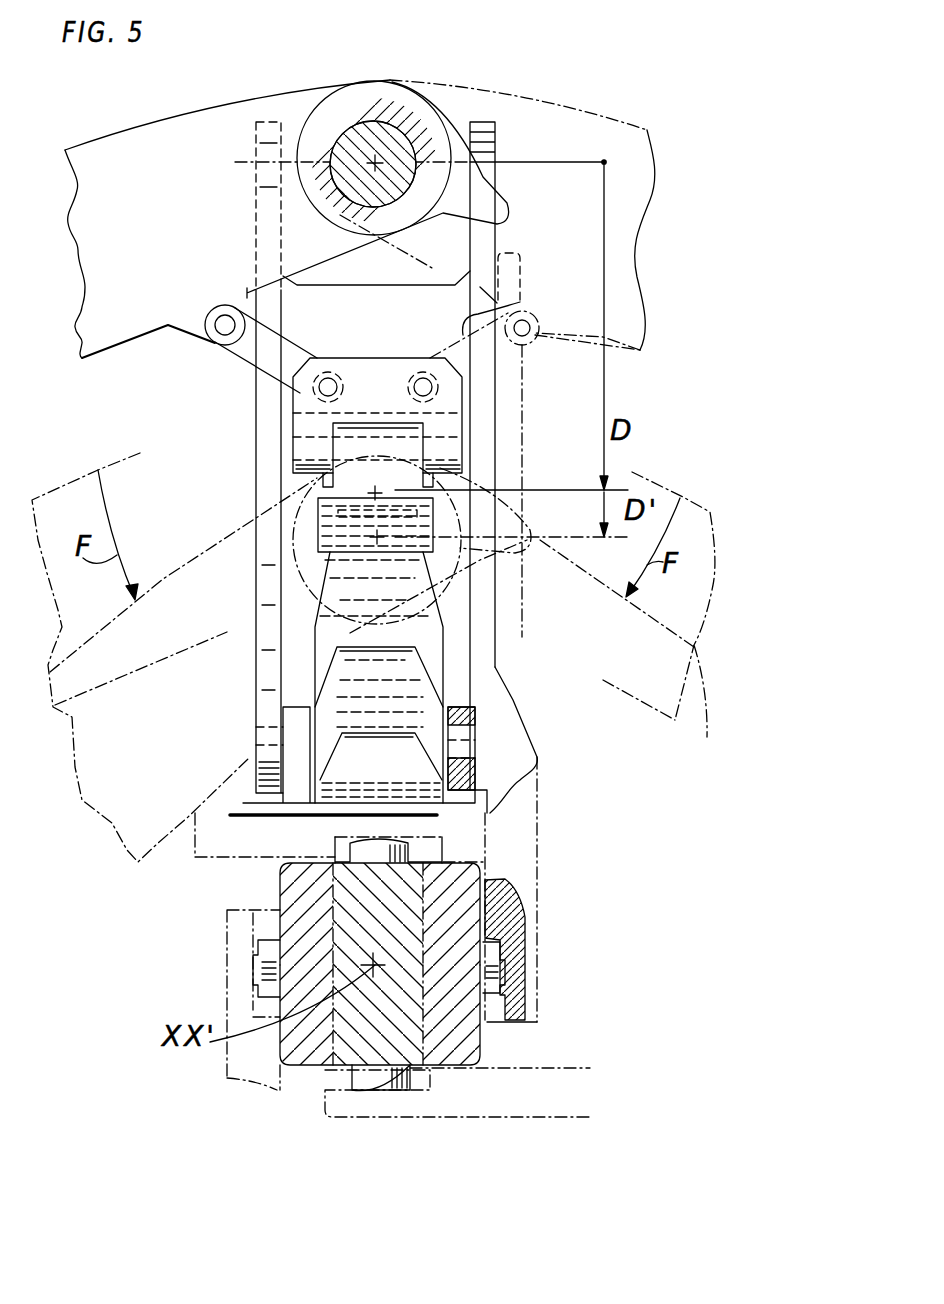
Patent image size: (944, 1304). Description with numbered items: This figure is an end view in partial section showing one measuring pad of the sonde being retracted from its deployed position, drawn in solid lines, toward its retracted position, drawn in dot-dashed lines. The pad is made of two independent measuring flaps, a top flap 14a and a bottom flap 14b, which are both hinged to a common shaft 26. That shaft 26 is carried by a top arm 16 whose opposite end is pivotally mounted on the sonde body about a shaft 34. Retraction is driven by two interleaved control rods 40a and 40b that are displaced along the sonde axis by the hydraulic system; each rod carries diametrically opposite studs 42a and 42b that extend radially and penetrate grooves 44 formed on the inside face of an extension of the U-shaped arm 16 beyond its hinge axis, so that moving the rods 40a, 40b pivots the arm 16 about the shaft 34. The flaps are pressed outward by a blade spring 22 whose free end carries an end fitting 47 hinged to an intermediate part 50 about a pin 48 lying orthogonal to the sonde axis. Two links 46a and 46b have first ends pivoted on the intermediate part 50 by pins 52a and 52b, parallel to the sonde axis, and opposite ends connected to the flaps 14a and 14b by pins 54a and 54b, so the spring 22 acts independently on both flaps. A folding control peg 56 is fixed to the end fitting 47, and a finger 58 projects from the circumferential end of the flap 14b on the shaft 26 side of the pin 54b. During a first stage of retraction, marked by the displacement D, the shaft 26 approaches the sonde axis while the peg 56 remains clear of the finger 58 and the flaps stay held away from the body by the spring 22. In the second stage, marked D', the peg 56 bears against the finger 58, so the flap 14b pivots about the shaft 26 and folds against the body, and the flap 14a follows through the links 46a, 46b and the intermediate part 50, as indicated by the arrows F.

The top flap 14a is at (550, 107).
The bottom flap 14b is at (112, 137).
The top arm 16 is at (493, 637).
The blade spring 22 is at (318, 690).
The common shaft 26 is at (348, 132).
The shaft 34 is at (463, 733).
The control rod 40a is at (467, 892).
The control rod 40b is at (397, 1033).
The stud 42a is at (260, 963).
The stud 42b is at (335, 843).
The groove 44 is at (430, 843).
The link 46a is at (500, 307).
The link 46b is at (240, 356).
The end fitting 47 is at (317, 485).
The pin 48 is at (462, 440).
The intermediate part 50 is at (462, 418).
The pin 52a is at (423, 378).
The pin 52b is at (328, 378).
The pin 54a is at (530, 336).
The pin 54b is at (217, 322).
The folding control peg 56 is at (512, 253).
The finger 58 is at (505, 197).